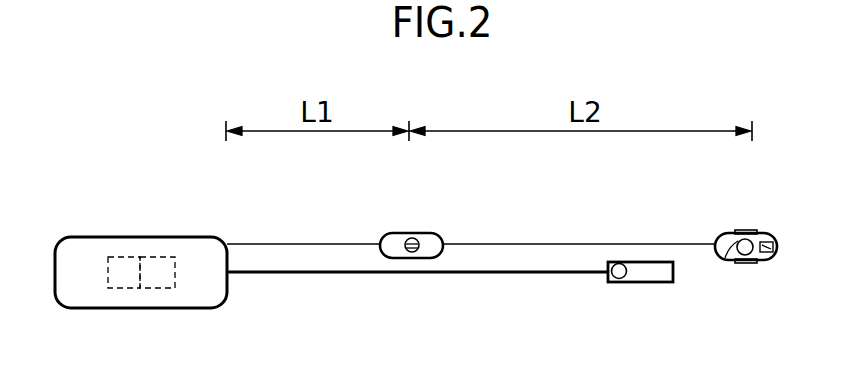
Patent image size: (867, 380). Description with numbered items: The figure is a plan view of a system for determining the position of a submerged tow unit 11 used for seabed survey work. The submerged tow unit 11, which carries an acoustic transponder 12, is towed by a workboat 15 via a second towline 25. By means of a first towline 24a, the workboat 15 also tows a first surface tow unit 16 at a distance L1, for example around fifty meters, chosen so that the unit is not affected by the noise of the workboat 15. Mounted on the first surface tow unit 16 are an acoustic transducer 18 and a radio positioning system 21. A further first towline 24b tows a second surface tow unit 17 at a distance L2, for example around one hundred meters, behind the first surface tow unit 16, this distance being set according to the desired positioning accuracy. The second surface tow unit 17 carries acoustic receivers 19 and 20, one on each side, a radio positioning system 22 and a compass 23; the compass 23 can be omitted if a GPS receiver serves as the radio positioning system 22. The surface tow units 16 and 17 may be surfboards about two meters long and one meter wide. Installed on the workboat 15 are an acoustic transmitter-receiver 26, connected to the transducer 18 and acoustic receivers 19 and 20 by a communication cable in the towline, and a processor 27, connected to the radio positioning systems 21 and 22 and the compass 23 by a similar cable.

The submerged tow unit 11 is at (654, 283).
The acoustic transponder 12 is at (617, 278).
The workboat 15 is at (137, 236).
The first surface tow unit 16 is at (385, 235).
The second surface tow unit 17 is at (718, 236).
The acoustic transducer 18 is at (412, 253).
The acoustic receiver 19 is at (748, 230).
The acoustic receiver 20 is at (753, 263).
The radio positioning system 21 is at (412, 238).
The radio positioning system 22 is at (728, 258).
The compass 23 is at (779, 245).
The first towline 24a is at (270, 243).
The first towline 24b is at (600, 242).
The second towline 25 is at (325, 275).
The acoustic transmitter-receiver 26 is at (116, 291).
The processor 27 is at (163, 291).